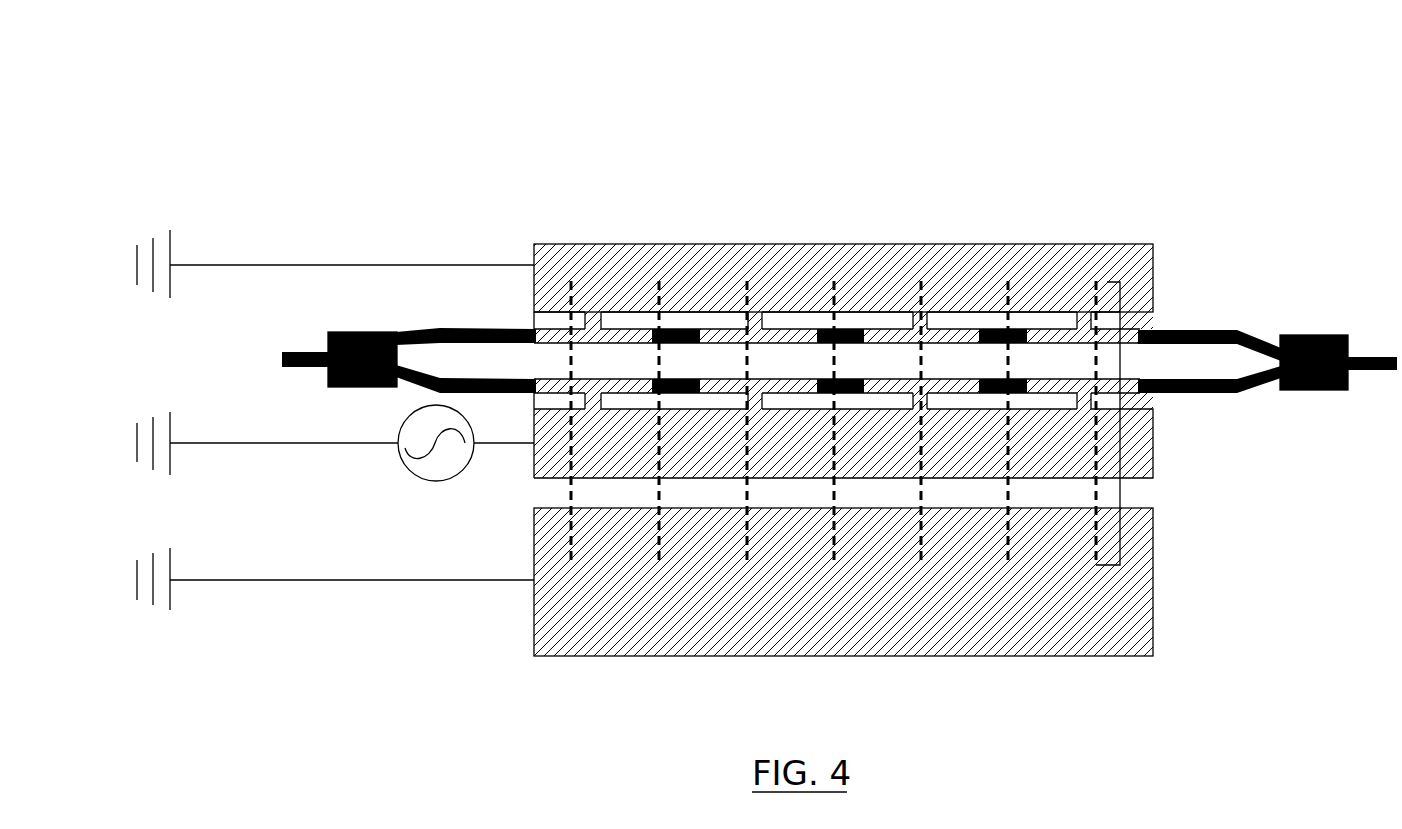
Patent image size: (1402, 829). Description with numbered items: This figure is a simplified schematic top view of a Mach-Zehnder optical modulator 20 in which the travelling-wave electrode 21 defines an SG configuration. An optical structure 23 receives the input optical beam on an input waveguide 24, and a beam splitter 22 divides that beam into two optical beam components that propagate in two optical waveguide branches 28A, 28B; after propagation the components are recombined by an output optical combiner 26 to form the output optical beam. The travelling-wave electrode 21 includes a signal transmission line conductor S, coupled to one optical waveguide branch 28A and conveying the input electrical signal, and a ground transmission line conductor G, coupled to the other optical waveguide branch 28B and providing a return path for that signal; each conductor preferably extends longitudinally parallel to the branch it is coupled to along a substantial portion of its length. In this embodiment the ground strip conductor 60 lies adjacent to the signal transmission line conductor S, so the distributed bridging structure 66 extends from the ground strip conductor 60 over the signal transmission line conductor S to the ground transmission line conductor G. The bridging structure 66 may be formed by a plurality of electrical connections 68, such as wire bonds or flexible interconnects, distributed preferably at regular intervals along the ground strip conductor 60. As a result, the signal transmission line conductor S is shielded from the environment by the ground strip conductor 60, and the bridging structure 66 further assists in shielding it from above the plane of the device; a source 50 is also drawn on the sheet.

The Mach-Zehnder optical modulator 20 is at (603, 72).
The travelling-wave electrode 21 is at (871, 360).
The beam splitter 22 is at (363, 388).
The optical structure 23 is at (1267, 312).
The input waveguide 24 is at (282, 358).
The output optical combiner 26 is at (1313, 391).
The optical waveguide branch 28A is at (1222, 330).
The optical waveguide branch 28B is at (1195, 394).
The RF power source 50 is at (436, 484).
The ground strip conductor 60 is at (1025, 658).
The distributed bridging structure 66 is at (1128, 425).
The electrical connections 68 is at (747, 302).
The ground transmission line conductor G is at (1025, 243).
The signal transmission line conductor S is at (1153, 480).